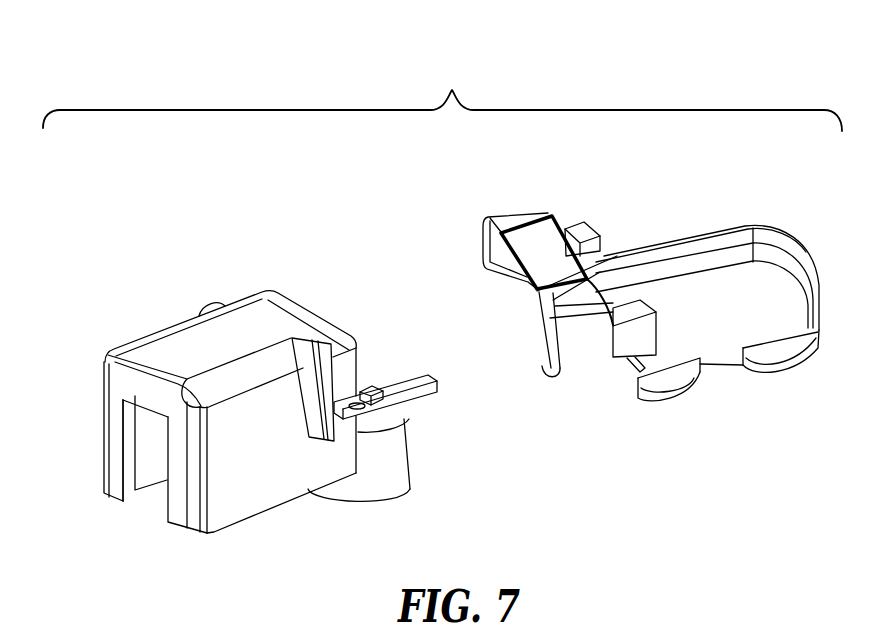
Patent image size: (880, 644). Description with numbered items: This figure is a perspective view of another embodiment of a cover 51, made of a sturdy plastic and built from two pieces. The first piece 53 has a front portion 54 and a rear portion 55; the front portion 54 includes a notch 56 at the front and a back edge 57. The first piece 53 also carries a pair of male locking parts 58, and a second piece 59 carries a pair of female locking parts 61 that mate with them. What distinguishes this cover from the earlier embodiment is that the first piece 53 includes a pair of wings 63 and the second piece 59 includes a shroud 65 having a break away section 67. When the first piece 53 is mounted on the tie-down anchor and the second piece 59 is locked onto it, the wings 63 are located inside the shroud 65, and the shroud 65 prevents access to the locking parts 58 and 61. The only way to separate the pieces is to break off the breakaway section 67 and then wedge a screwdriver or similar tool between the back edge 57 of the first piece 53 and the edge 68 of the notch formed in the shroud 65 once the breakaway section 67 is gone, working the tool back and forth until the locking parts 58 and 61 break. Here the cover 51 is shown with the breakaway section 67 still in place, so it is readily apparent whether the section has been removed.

The cover 51 is at (467, 61).
The first piece 53 is at (230, 413).
The front portion 54 is at (182, 338).
The rear portion 55 is at (393, 462).
The notch 56 is at (140, 498).
The back edge 57 is at (297, 335).
The male locking parts 58 is at (408, 378).
The second piece 59 is at (643, 239).
The female locking parts 61 is at (622, 343).
The wings 63 is at (203, 303).
The shroud 65 is at (560, 374).
The breakaway section 67 is at (517, 240).
The edge 68 is at (551, 224).